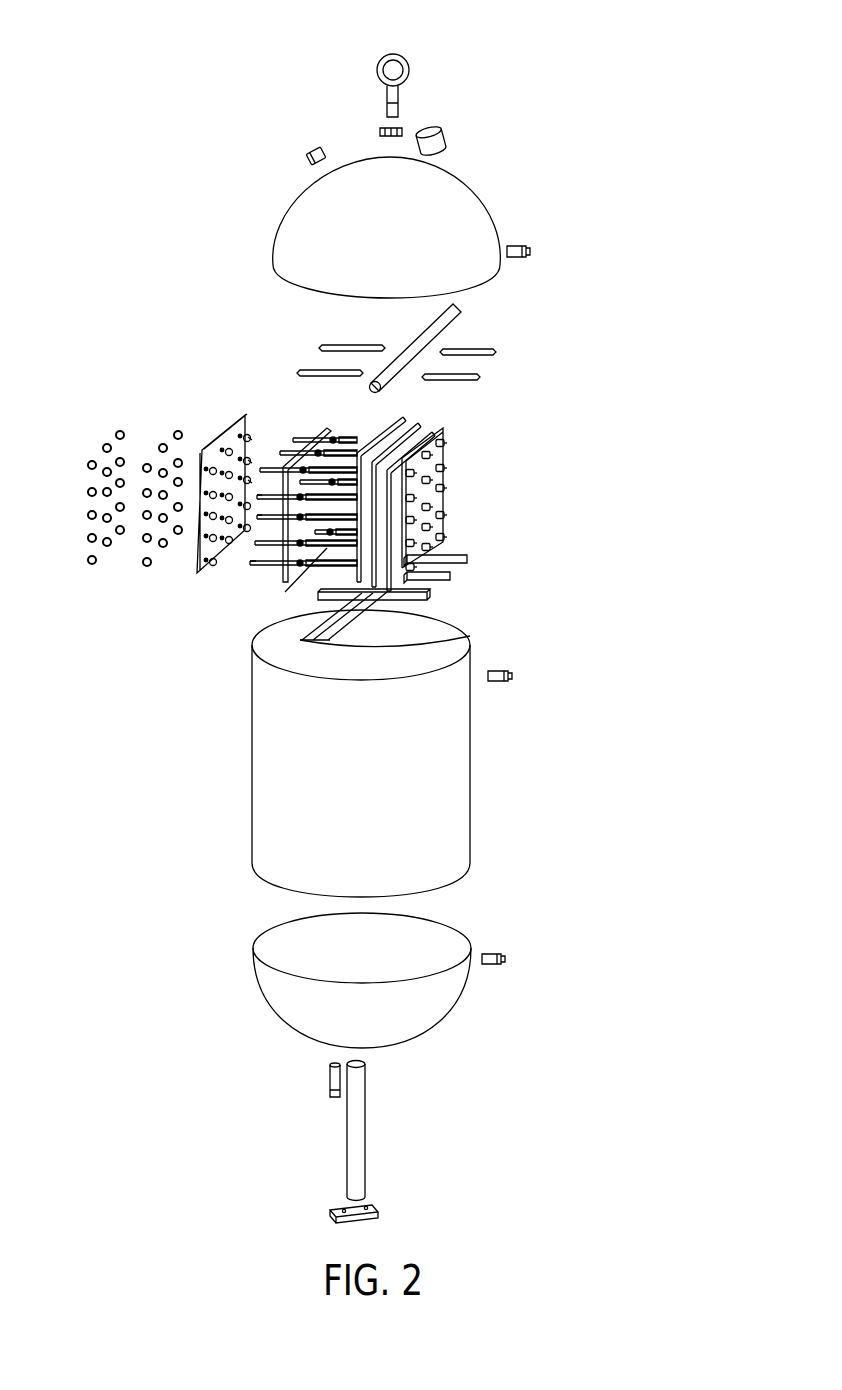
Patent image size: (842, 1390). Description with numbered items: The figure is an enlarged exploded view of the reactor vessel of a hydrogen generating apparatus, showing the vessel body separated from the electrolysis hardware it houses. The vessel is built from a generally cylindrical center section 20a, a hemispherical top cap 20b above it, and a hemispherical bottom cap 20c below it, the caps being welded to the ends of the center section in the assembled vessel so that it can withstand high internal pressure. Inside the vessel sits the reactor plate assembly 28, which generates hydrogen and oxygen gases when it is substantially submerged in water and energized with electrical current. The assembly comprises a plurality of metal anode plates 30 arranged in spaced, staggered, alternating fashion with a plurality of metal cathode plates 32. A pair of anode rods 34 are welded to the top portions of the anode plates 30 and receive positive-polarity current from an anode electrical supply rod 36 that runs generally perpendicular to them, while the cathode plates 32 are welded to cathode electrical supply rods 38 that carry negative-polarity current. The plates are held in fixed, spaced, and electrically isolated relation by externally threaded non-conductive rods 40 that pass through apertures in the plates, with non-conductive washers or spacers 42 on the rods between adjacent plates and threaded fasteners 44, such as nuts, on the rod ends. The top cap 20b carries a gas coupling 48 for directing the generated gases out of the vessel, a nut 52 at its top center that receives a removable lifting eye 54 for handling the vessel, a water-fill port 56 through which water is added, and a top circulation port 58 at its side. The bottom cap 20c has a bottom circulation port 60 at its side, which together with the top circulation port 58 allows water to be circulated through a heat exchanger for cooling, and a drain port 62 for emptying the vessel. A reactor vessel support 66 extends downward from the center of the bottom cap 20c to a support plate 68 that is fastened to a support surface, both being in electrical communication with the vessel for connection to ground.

The cylindrical center section 20a is at (470, 775).
The top cap 20b is at (477, 197).
The bottom cap 20c is at (452, 1010).
The reactor plate assembly 28 is at (535, 463).
The anode plates 30 is at (245, 417).
The cathode plates 32 is at (285, 588).
The anode rods 34 is at (300, 373).
The anode electrical supply rod 36 is at (460, 310).
The cathode electrical supply rods 38 is at (428, 597).
The non-conductive rods 40 is at (257, 562).
The non-conductive washers or spacers 42 is at (252, 442).
The threaded fasteners 44 is at (120, 437).
The gas coupling 48 is at (308, 153).
The internally threaded stainless steel nut 52 is at (380, 130).
The lifting eye 54 is at (393, 53).
The water-fill port 56 is at (452, 140).
The top circulation port 58 is at (532, 251).
The bottom circulation port 60 is at (506, 959).
The drain port 62 is at (328, 1076).
The reactor vessel support 66 is at (366, 1078).
The support plate 68 is at (378, 1212).